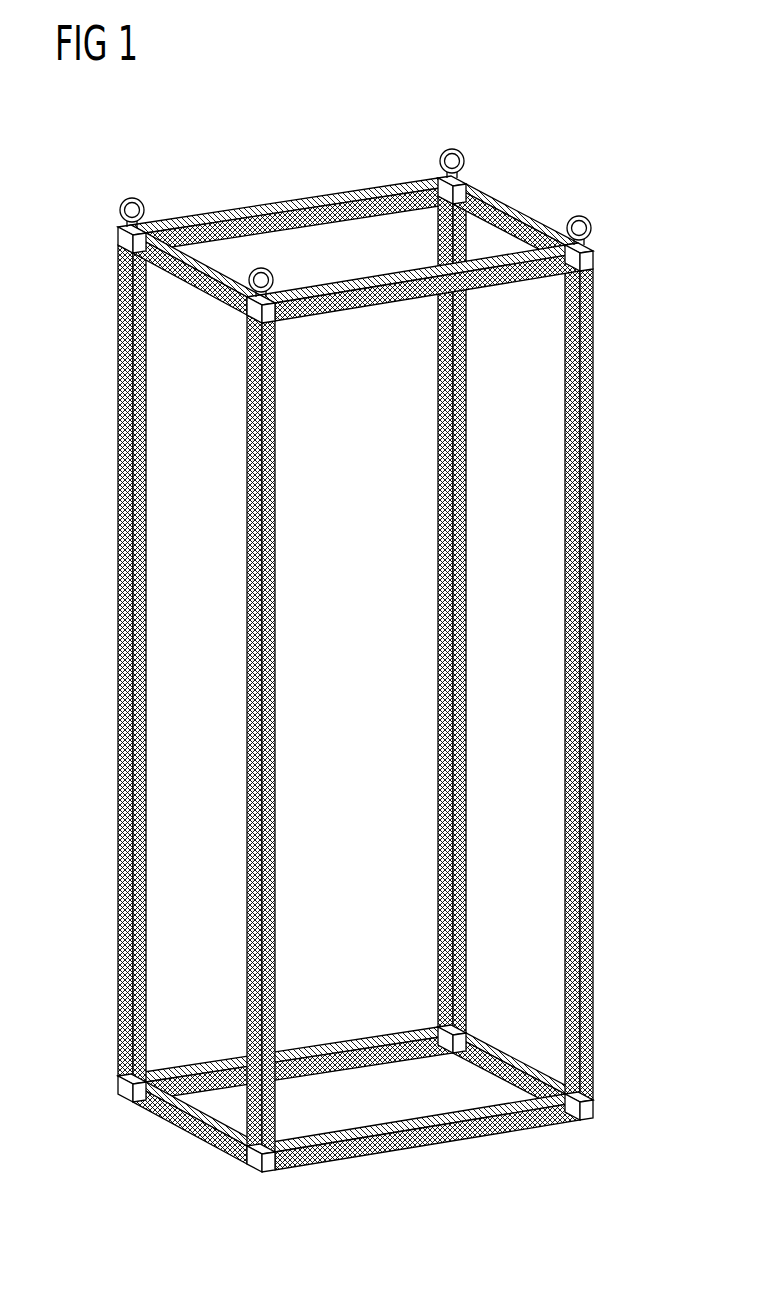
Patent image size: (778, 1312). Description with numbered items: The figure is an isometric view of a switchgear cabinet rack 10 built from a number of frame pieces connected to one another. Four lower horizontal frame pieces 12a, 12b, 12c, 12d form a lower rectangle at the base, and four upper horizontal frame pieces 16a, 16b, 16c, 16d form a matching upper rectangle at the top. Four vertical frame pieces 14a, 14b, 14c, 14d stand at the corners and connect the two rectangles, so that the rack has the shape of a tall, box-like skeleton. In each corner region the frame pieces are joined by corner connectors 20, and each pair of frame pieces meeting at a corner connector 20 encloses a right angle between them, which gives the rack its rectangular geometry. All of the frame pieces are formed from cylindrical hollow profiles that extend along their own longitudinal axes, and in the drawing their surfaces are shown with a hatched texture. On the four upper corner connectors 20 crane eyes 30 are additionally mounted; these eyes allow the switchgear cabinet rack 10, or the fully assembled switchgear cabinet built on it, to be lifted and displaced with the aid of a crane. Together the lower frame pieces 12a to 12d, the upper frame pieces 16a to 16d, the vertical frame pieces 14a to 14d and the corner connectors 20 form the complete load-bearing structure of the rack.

The switchgear cabinet rack 10 is at (190, 168).
The lower horizontal frame piece 12a is at (175, 1120).
The lower horizontal frame piece 12b is at (430, 1137).
The lower horizontal frame piece 12c is at (510, 1048).
The lower horizontal frame piece 12d is at (328, 1032).
The vertical frame piece 14a is at (148, 672).
The vertical frame piece 14b is at (277, 648).
The vertical frame piece 14c is at (596, 663).
The vertical frame piece 14d is at (468, 625).
The upper horizontal frame piece 16a is at (200, 287).
The upper horizontal frame piece 16b is at (370, 305).
The upper horizontal frame piece 16c is at (518, 203).
The upper horizontal frame piece 16d is at (285, 197).
The corner connector 20 is at (120, 235).
The crane eye 30 is at (467, 155).